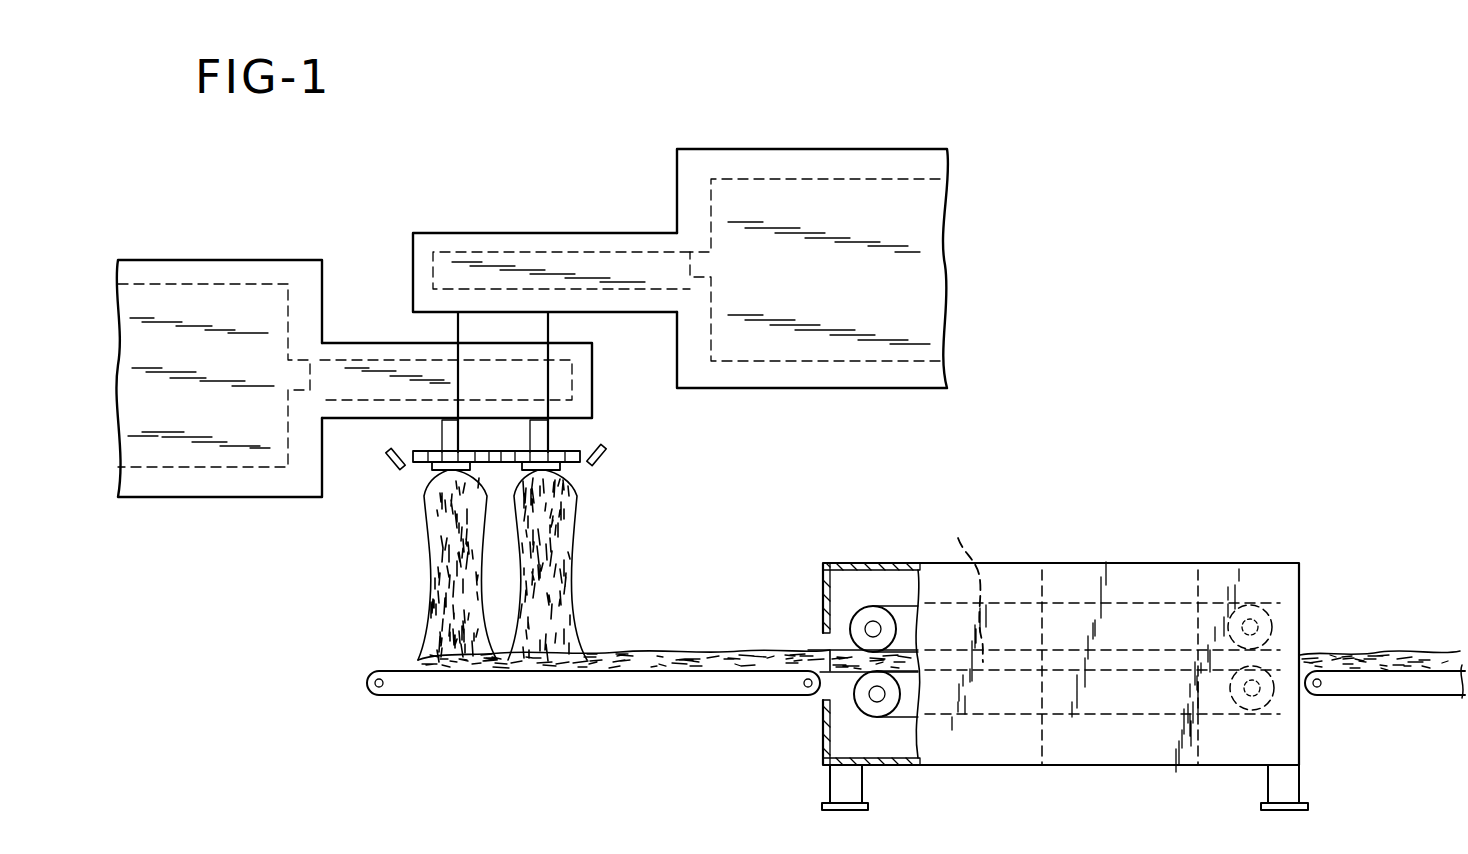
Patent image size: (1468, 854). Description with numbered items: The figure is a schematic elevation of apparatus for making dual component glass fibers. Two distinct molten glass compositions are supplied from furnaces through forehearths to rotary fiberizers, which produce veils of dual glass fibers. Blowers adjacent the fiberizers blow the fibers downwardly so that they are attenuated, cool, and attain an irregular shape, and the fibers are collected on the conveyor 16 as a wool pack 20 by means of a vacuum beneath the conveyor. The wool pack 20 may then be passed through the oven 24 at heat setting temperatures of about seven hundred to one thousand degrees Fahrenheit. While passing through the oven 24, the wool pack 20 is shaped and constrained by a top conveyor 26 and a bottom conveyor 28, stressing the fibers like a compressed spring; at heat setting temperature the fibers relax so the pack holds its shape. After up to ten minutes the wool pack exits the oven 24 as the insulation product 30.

The conveyor 16 is at (396, 670).
The wool pack 20 is at (682, 648).
The oven 24 is at (1109, 563).
The top conveyor 26 is at (1020, 603).
The bottom conveyor 28 is at (1145, 673).
The insulation product 30 is at (1365, 652).